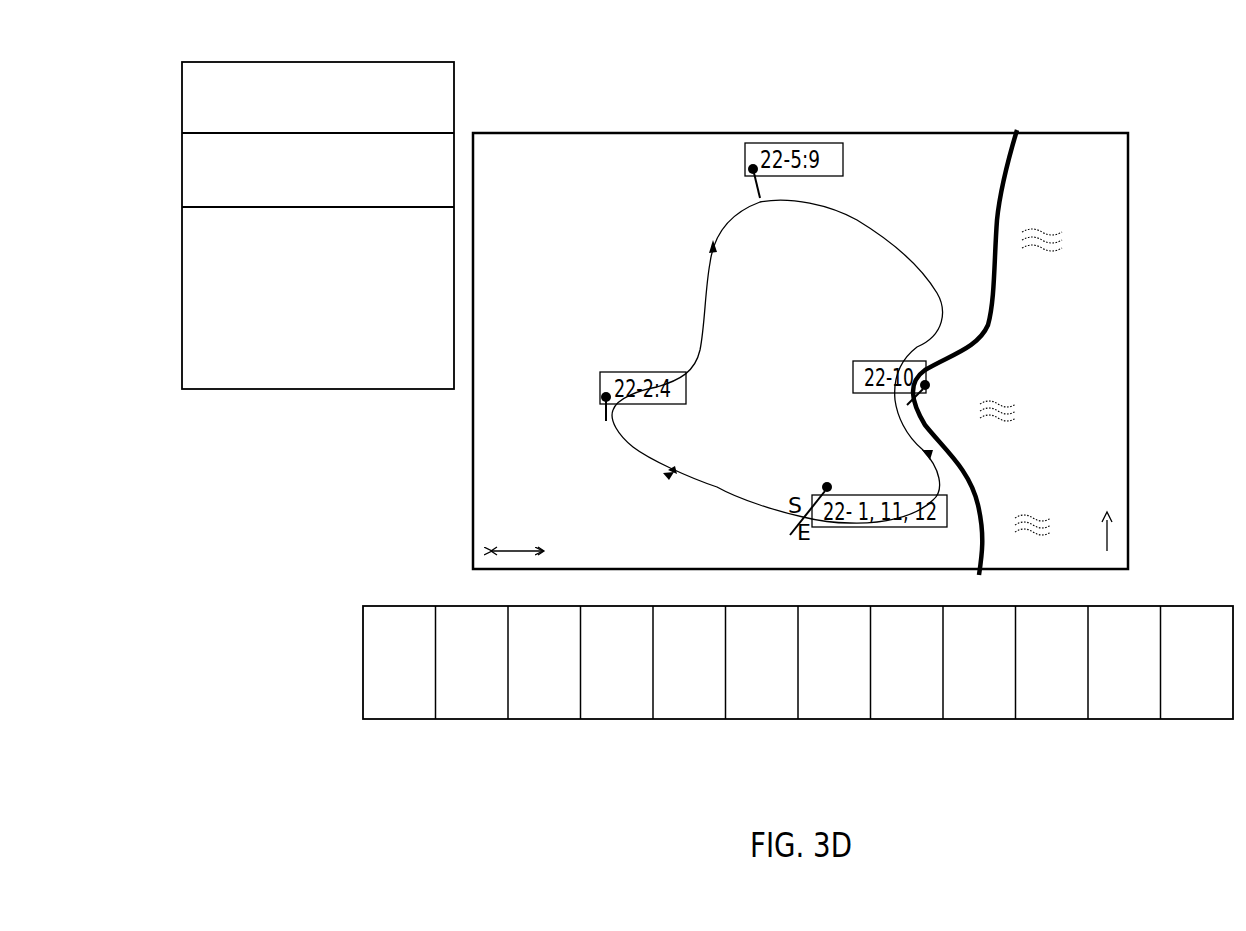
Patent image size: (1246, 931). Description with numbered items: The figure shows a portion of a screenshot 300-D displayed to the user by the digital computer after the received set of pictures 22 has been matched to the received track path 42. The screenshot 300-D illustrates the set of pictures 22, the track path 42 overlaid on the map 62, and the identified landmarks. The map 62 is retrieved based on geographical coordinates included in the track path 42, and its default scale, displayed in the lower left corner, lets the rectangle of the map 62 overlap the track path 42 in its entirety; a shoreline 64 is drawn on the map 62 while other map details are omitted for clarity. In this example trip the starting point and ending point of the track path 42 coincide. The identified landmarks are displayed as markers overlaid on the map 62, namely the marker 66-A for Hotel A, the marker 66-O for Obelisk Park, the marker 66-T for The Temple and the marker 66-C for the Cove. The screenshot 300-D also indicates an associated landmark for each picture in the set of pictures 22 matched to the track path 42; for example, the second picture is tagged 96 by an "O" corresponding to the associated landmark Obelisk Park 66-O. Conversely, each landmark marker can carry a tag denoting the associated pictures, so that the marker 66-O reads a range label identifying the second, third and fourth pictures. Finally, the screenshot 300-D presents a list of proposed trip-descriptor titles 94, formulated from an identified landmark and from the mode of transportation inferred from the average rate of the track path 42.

The screenshot 300-D is at (801, 53).
The list of proposed trip-descriptor titles 94 is at (418, 62).
The map 62 is at (1128, 172).
The shoreline 64 is at (1006, 172).
The track path 42 is at (706, 298).
The marker for The Temple 66-T is at (730, 176).
The marker for Obelisk Park 66-O is at (582, 401).
The marker for the Cove 66-C is at (939, 399).
The marker for Hotel A 66-A is at (807, 496).
The set of pictures 22 is at (363, 660).
The tag 96 is at (476, 613).